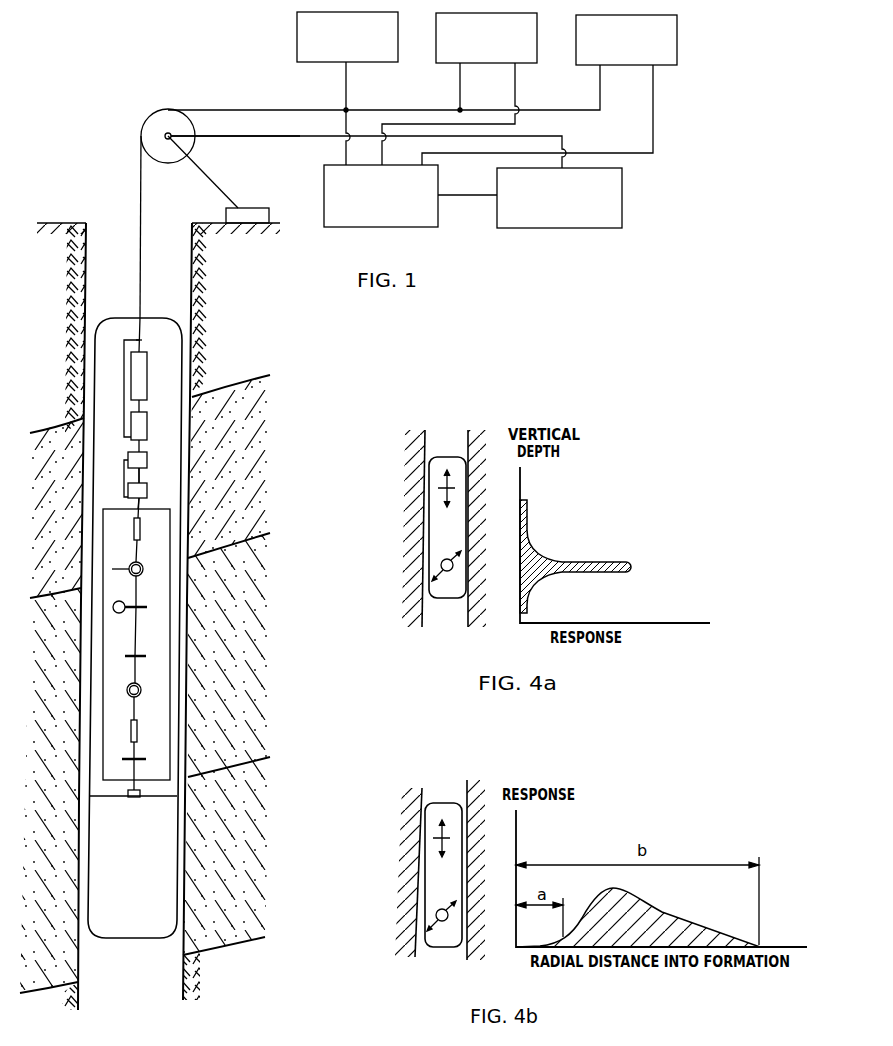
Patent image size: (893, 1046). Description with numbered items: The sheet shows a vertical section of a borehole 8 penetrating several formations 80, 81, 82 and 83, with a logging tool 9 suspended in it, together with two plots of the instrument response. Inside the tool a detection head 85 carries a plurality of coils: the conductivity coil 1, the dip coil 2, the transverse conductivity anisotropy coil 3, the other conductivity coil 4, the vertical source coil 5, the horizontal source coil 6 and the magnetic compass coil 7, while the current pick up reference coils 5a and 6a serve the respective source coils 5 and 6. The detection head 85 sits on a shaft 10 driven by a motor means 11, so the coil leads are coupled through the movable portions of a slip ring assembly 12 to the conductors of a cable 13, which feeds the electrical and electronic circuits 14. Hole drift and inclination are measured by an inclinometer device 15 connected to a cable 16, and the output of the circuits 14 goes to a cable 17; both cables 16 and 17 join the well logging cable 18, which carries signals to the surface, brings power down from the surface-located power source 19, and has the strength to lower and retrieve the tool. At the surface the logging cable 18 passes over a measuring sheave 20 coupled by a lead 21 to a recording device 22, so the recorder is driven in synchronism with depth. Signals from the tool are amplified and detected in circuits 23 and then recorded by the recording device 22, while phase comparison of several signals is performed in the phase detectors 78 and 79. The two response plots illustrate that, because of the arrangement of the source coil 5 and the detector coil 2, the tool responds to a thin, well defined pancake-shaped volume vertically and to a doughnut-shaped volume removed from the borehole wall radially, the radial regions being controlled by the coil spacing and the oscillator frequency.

In FIG. 1, the conductivity coil 1 is at (125, 759).
In FIG. 1, the dip coil 2 is at (137, 731).
In FIG. 4A, the dip coil 2 is at (441, 565).
In FIG. 4B, the dip coil 2 is at (436, 913).
In FIG. 1, the transverse conductivity anisotropy coil 3 is at (141, 687).
In FIG. 1, the conductivity coil 4 is at (142, 655).
In FIG. 1, the vertical source coil 5 is at (141, 605).
In FIG. 4A, the vertical source coil 5 is at (440, 495).
In FIG. 4B, the vertical source coil 5 is at (435, 845).
In FIG. 1, the current pick up reference coil 5a is at (119, 613).
In FIG. 1, the horizontal source coil 6 is at (143, 566).
In FIG. 1, the current pick up reference coil 6a is at (112, 567).
In FIG. 1, the magnetic compass coil 7 is at (140, 530).
In FIG. 1, the borehole 8 is at (170, 256).
In FIG. 4A, the borehole 8 is at (437, 432).
In FIG. 4B, the borehole 8 is at (437, 795).
In FIG. 1, the logging tool 9 is at (130, 318).
In FIG. 1, the shaft 10 is at (140, 476).
In FIG. 1, the motor means 11 is at (147, 460).
In FIG. 1, the slip ring assembly 12 is at (147, 490).
In FIG. 1, the cable 13 is at (124, 458).
In FIG. 1, the electrical and electronic circuits 14 is at (147, 428).
In FIG. 1, the inclinometer device 15 is at (147, 377).
In FIG. 1, the cable 16 is at (141, 350).
In FIG. 1, the cable 17 is at (124, 385).
In FIG. 1, the well logging cable 18 is at (140, 277).
In FIG. 1, the power source 19 is at (318, 68).
In FIG. 1, the measuring sheave 20 is at (147, 122).
In FIG. 1, the lead 21 is at (243, 139).
In FIG. 1, the recording device 22 is at (622, 186).
In FIG. 1, the amplifying and detecting circuits 23 is at (324, 185).
In FIG. 1, the phase detector 78 is at (452, 68).
In FIG. 1, the phase detector 79 is at (591, 70).
In FIG. 1, the formation 80 is at (260, 320).
In FIG. 1, the formation 81 is at (261, 471).
In FIG. 1, the formation 82 is at (255, 657).
In FIG. 1, the formation 83 is at (248, 851).
In FIG. 1, the detection head 85 is at (125, 719).